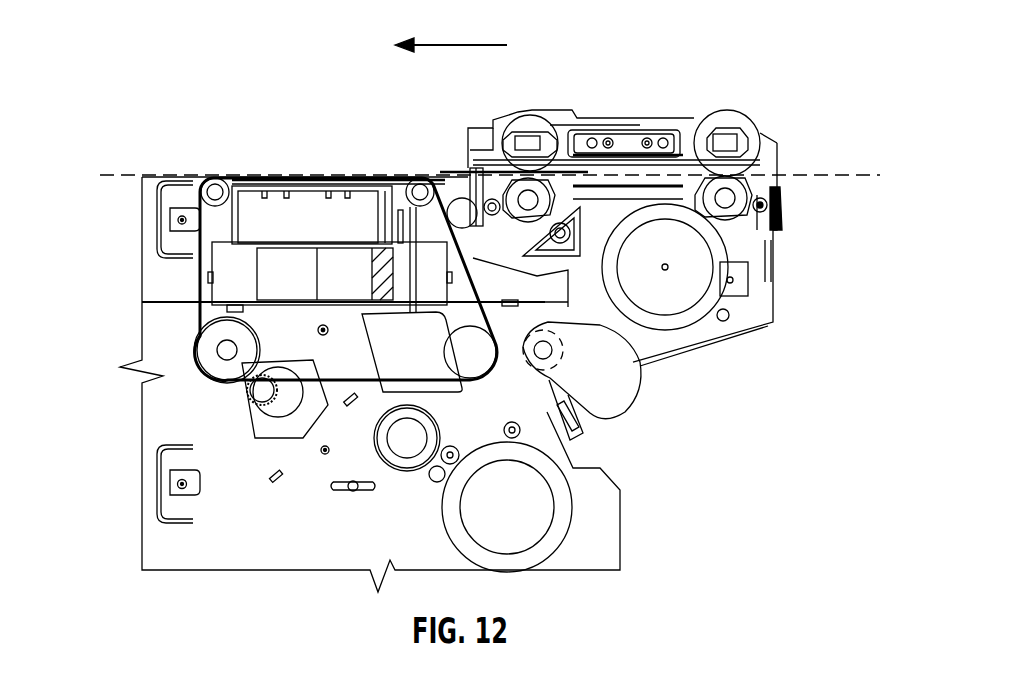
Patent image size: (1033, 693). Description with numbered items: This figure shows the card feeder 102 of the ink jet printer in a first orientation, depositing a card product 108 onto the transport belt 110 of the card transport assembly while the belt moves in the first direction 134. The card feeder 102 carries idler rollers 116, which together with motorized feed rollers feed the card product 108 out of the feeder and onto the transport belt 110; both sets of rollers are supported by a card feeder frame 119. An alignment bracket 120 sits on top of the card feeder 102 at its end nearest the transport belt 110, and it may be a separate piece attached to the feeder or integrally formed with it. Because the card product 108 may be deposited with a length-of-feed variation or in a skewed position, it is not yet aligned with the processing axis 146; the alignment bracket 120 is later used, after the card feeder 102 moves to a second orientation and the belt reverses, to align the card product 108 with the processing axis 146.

The card feeder 102 is at (661, 138).
The card product 108 is at (355, 172).
The transport belt 110 is at (272, 175).
The idler rollers 116 is at (752, 145).
The card feeder frame 119 is at (757, 195).
The alignment bracket 120 is at (545, 110).
The first direction 134 is at (460, 44).
The processing axis 146 is at (107, 175).